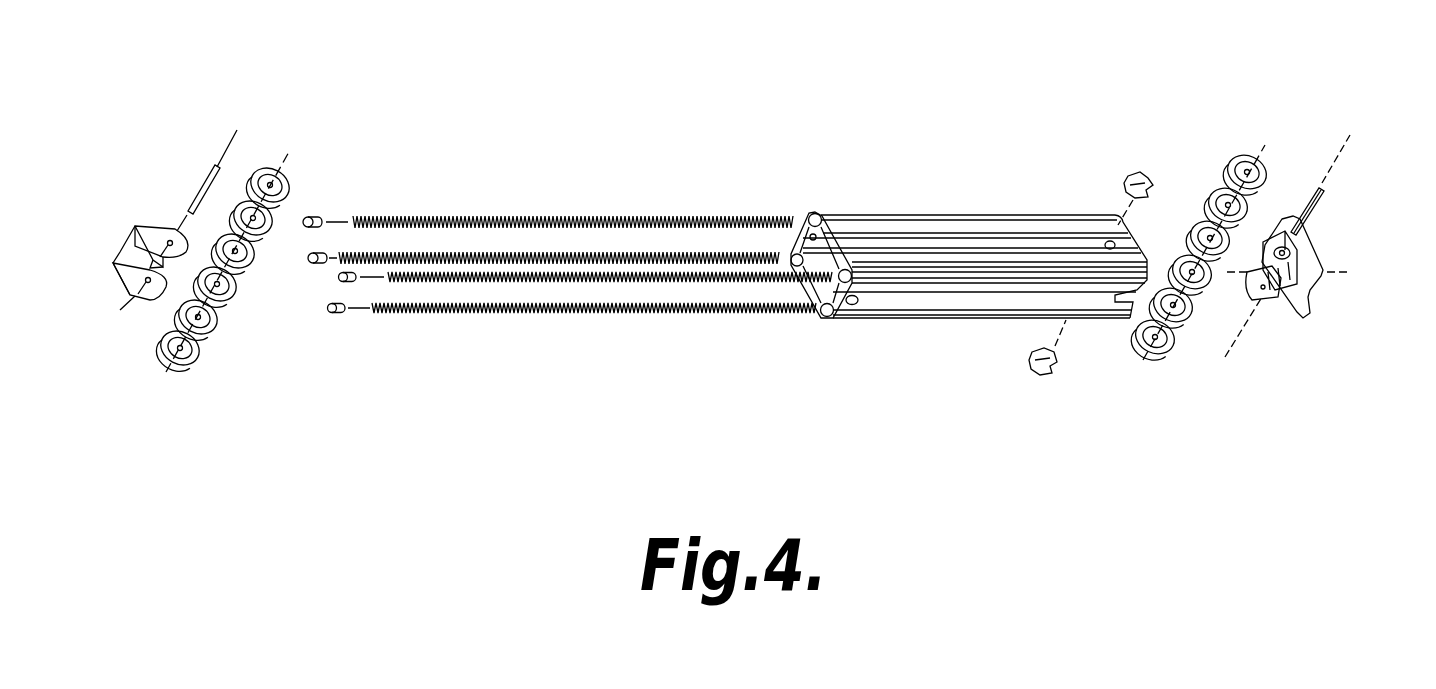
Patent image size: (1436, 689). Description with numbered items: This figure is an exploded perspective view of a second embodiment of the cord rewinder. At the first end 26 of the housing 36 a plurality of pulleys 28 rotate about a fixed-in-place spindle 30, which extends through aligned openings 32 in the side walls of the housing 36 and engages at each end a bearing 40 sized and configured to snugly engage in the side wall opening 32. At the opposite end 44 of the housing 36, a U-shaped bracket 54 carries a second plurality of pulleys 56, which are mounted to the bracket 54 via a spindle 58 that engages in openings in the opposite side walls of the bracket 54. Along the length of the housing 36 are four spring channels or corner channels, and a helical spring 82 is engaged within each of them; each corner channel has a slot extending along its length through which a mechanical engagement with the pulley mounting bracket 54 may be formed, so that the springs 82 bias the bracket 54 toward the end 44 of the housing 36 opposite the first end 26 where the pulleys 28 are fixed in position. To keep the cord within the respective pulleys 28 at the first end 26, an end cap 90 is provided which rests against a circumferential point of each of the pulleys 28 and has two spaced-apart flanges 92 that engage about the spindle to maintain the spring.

The first end 26 is at (1133, 255).
The pulleys 28 is at (1176, 362).
The spindle 30 is at (1304, 200).
The openings 32 is at (1106, 241).
The housing 36 is at (992, 214).
The bearing 40 is at (1040, 377).
The end 44 is at (820, 320).
The bracket 54 is at (160, 222).
The second plurality of pulleys 56 is at (300, 160).
The spindle 58 is at (196, 198).
The helical spring 82 is at (670, 216).
The end cap 90 is at (1323, 263).
The flanges 92 is at (1262, 303).